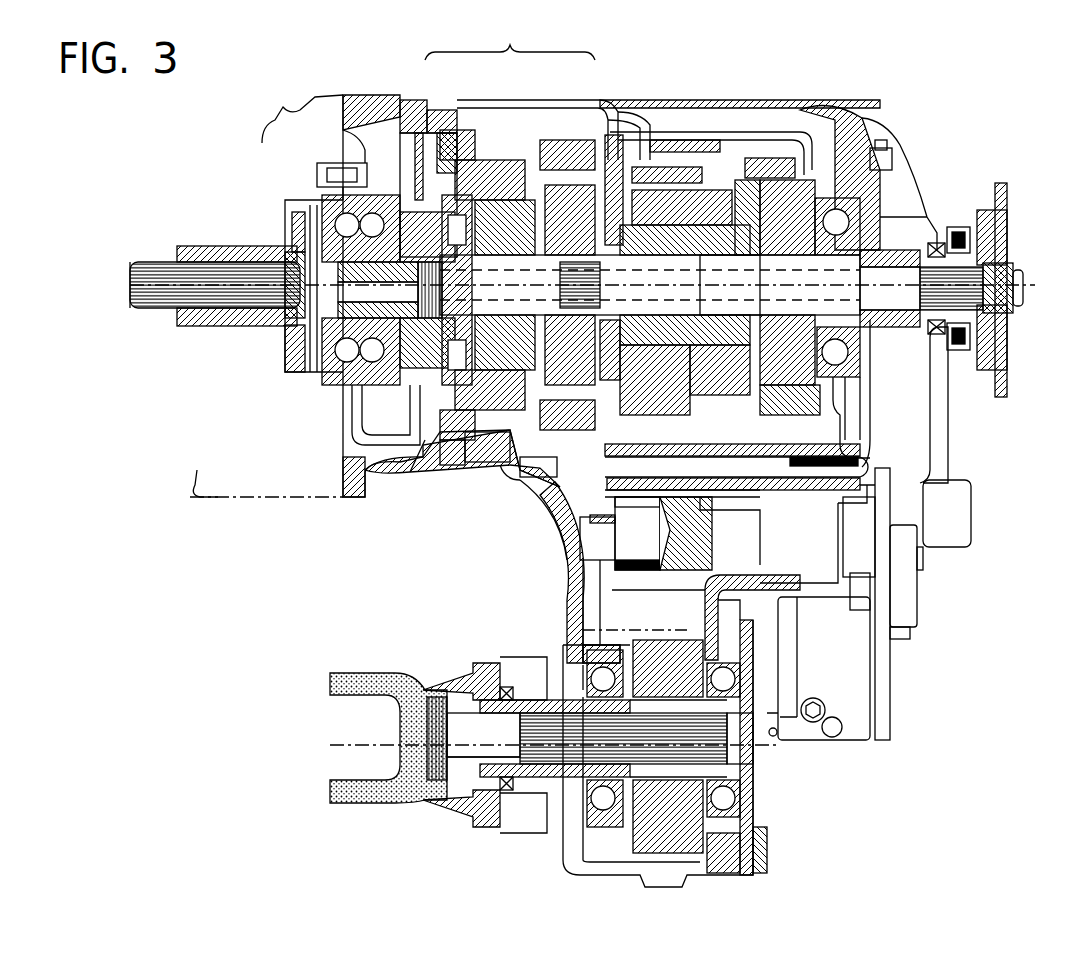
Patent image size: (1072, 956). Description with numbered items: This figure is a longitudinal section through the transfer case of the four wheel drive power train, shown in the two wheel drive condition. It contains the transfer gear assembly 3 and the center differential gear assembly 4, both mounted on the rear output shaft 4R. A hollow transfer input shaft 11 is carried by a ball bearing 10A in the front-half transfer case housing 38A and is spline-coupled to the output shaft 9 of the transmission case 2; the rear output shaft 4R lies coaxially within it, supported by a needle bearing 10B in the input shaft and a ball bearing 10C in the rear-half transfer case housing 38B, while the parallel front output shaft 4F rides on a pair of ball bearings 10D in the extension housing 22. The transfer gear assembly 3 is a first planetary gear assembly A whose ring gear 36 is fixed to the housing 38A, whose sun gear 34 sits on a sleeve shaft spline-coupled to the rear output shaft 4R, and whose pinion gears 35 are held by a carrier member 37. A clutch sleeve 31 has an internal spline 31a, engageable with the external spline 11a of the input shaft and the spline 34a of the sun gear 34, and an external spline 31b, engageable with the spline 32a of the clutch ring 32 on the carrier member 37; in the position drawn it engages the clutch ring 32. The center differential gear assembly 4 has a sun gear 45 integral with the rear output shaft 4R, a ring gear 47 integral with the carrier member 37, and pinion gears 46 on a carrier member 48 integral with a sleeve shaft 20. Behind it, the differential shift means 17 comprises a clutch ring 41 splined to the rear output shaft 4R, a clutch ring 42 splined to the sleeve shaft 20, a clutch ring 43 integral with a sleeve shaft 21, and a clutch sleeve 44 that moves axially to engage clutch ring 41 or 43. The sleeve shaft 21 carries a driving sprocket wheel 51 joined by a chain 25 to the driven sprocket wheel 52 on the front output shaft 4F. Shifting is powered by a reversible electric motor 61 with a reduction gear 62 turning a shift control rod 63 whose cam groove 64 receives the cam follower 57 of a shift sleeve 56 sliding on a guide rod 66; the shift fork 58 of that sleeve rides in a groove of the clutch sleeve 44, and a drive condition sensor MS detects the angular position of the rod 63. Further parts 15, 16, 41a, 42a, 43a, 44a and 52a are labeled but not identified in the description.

The transmission case 2 is at (202, 497).
The transfer gear assembly 3 is at (385, 495).
The center differential gear assembly 4 is at (640, 170).
The rear output shaft 4R is at (905, 267).
The front output shaft 4F is at (460, 777).
The output shaft 9 is at (160, 308).
The ball bearing 10A is at (337, 372).
The needle bearing 10B is at (285, 348).
The ball bearing 10C is at (845, 222).
The ball bearings 10D is at (587, 815).
The transfer input shaft 11 is at (218, 246).
The external spline 11a is at (345, 163).
The output flange 15 is at (995, 200).
The front output yoke 16 is at (355, 803).
The differential shift means 17 is at (852, 432).
The sleeve shaft 20 is at (676, 380).
The sleeve shaft 21 is at (710, 420).
The extension housing 22 is at (567, 612).
The chain 25 is at (583, 630).
The clutch sleeve 31 is at (352, 412).
The internal spline 31a is at (375, 120).
The external spline 31b is at (420, 140).
The clutch ring 32 is at (448, 465).
The spline 32a is at (420, 470).
The sun gear 34 is at (458, 130).
The spline 34a is at (478, 462).
The pinion gears 35 is at (490, 160).
The ring gear 36 is at (505, 200).
The carrier member 37 is at (565, 140).
The front-half transfer case housing 38A is at (595, 100).
The rear-half transfer case housing 38B is at (822, 125).
The clutch ring 41 is at (815, 370).
The clutch sleeve portion 41a is at (790, 300).
The clutch ring 42 is at (820, 395).
The clutch hub portion 42a is at (760, 160).
The clutch ring 43 is at (745, 345).
The clutch gear portion 43a is at (700, 140).
The clutch sleeve 44 is at (750, 180).
The shift sleeve portion 44a is at (785, 180).
The sun gear 45 is at (632, 170).
The pinion gears 46 is at (610, 135).
The ring gear 47 is at (545, 480).
The carrier member 48 is at (652, 385).
The driving sprocket wheel 51 is at (668, 195).
The driven sprocket wheel 52 is at (745, 780).
The motor bracket 52a is at (797, 630).
The shift sleeve 56 is at (565, 525).
The cam follower 57 is at (688, 545).
The shift fork 58 is at (780, 395).
The reversible electric motor 61 is at (862, 720).
The reduction gear 62 is at (917, 580).
The shift control rod 63 is at (560, 565).
The cam groove 64 is at (650, 570).
The guide rod 66 is at (505, 480).
The first planetary gear assembly A is at (510, 44).
The drive condition sensor MS is at (971, 512).